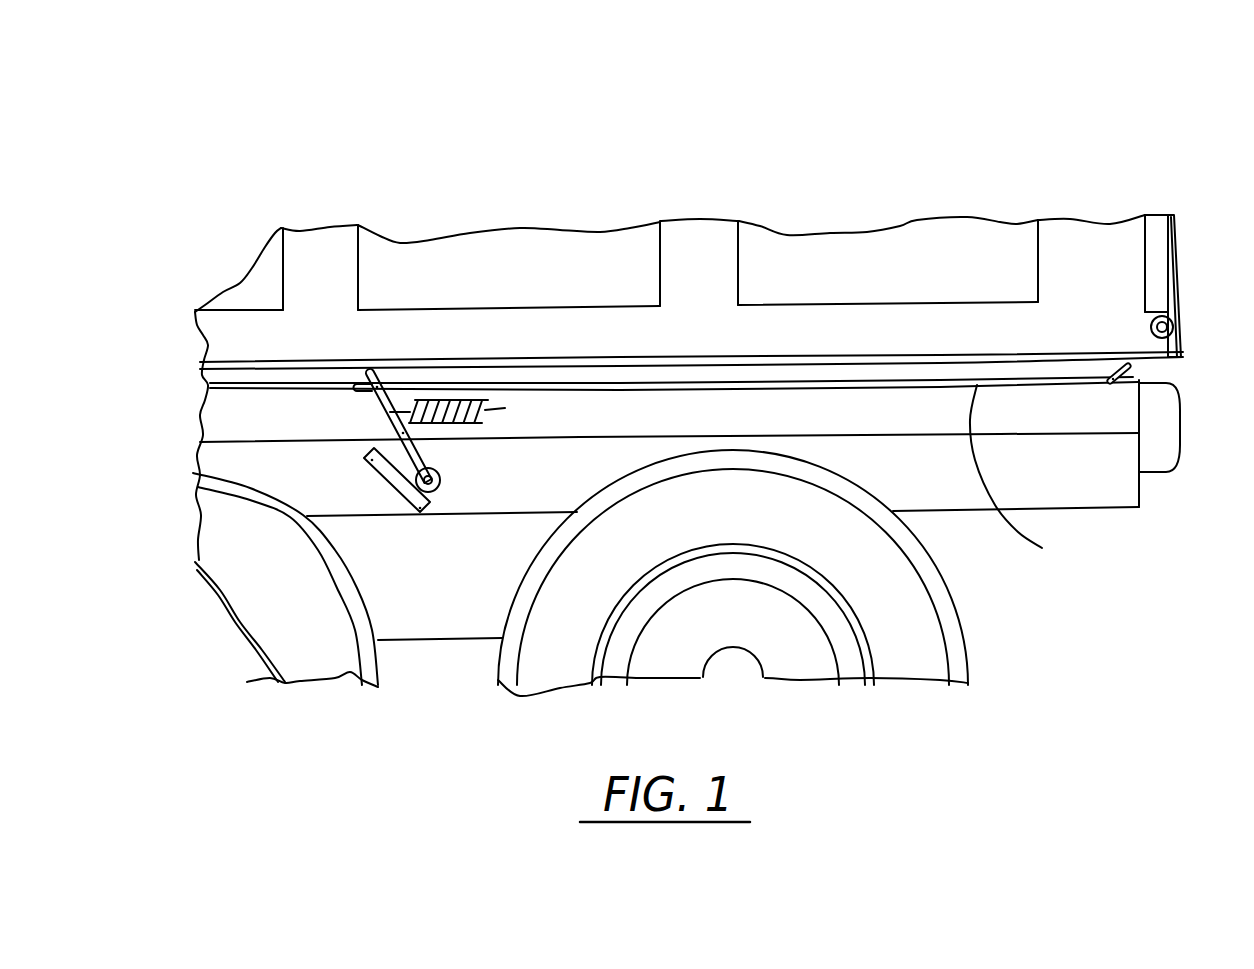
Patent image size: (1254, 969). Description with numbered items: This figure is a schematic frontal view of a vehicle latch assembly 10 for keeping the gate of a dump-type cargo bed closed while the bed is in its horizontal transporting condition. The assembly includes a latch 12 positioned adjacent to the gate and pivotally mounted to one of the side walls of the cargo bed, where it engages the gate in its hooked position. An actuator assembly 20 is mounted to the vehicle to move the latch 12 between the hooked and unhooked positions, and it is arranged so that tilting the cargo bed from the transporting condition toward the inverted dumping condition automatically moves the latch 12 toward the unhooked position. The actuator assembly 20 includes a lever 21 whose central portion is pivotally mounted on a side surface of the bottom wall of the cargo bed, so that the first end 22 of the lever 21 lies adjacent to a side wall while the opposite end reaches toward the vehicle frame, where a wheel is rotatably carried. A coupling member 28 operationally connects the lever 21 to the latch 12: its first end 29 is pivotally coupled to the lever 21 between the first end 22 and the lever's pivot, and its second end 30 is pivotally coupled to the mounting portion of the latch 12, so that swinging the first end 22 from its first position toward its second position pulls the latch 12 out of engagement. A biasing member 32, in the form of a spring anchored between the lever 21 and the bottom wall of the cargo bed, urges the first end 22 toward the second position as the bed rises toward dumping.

The vehicle latch assembly 10 is at (505, 163).
The latch 12 is at (1177, 358).
The actuator assembly 20 is at (416, 540).
The lever 21 is at (374, 408).
The first end of the lever 22 is at (367, 373).
The coupling member 28 is at (947, 583).
The first end of the coupling member 29 is at (390, 387).
The second end of the coupling member 30 is at (1103, 370).
The biasing member 32 is at (460, 400).